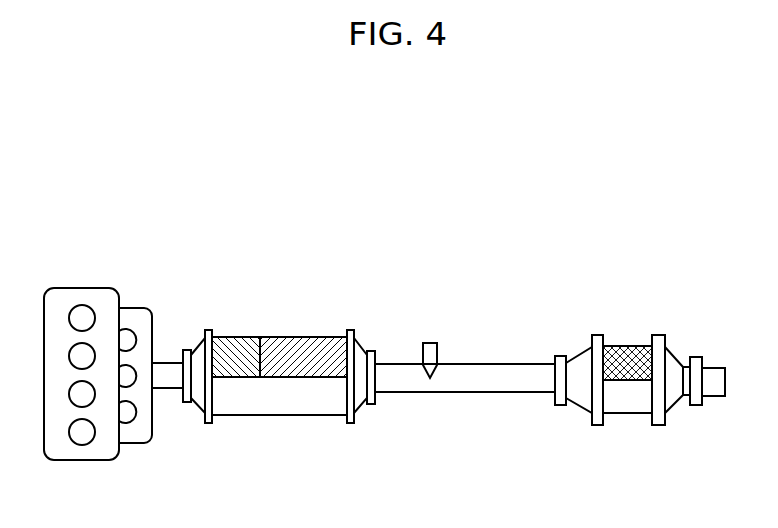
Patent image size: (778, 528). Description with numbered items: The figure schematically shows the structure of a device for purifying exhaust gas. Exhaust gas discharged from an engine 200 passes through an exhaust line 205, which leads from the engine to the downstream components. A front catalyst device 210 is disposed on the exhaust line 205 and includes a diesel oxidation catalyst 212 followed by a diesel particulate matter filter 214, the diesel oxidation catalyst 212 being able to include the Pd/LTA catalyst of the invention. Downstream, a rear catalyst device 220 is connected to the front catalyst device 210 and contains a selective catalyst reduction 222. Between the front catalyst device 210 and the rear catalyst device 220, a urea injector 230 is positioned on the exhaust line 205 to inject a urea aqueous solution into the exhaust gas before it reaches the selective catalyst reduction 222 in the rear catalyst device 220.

The engine 200 is at (72, 289).
The exhaust line 205 is at (173, 392).
The front catalyst device 210 is at (279, 394).
The diesel oxidation catalyst 212 is at (235, 337).
The diesel particulate matter filter 214 is at (300, 347).
The rear catalyst device 220 is at (640, 394).
The selective catalyst reduction 222 is at (627, 345).
The urea injector 230 is at (428, 343).